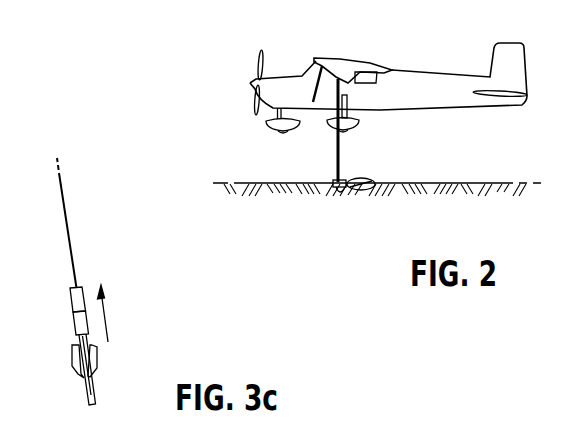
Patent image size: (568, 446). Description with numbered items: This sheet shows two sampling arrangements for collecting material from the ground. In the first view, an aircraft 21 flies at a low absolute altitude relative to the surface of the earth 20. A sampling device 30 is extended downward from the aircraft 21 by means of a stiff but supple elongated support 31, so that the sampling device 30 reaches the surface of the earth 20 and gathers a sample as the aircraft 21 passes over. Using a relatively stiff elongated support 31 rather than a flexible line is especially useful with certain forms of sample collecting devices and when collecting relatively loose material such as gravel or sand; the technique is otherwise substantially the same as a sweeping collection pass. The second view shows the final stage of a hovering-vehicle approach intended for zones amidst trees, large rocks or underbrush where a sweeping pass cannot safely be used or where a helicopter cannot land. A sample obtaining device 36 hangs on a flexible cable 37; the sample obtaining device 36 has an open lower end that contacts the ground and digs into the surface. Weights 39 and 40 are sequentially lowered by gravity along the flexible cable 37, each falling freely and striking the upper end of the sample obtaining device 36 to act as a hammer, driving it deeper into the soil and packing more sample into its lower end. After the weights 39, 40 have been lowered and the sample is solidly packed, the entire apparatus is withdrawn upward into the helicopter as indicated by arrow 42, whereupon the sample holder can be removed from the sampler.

In FIG. 2, the surface of the earth 20 is at (453, 183).
In FIG. 2, the aircraft 21 is at (423, 86).
In FIG. 2, the sampling device 30 is at (340, 197).
In FIG. 2, the elongated support 31 is at (341, 162).
In FIG. 3c, the sample obtaining device 36 is at (85, 394).
In FIG. 3c, the flexible cable 37 is at (69, 241).
In FIG. 3c, the weight 39 is at (73, 323).
In FIG. 3c, the weight 40 is at (70, 298).
In FIG. 3c, the arrow 42 is at (108, 319).